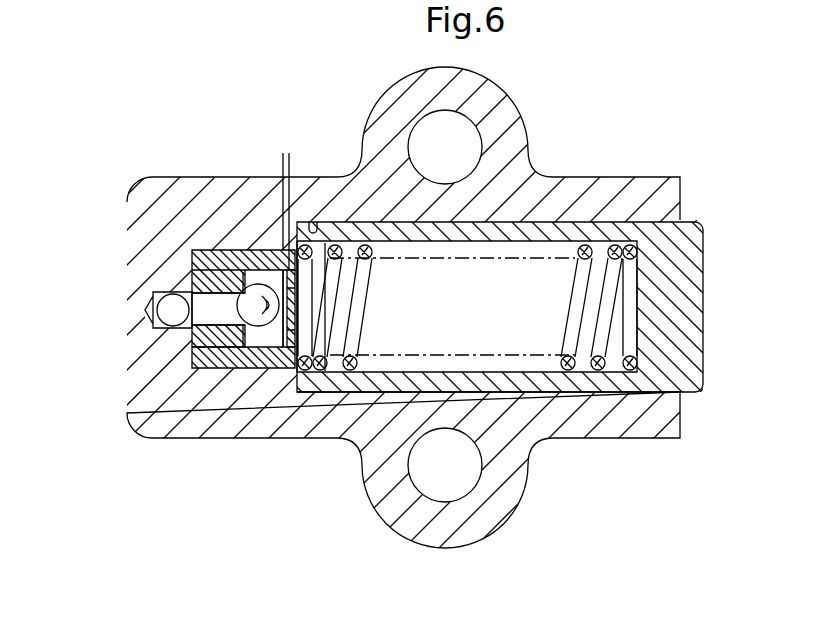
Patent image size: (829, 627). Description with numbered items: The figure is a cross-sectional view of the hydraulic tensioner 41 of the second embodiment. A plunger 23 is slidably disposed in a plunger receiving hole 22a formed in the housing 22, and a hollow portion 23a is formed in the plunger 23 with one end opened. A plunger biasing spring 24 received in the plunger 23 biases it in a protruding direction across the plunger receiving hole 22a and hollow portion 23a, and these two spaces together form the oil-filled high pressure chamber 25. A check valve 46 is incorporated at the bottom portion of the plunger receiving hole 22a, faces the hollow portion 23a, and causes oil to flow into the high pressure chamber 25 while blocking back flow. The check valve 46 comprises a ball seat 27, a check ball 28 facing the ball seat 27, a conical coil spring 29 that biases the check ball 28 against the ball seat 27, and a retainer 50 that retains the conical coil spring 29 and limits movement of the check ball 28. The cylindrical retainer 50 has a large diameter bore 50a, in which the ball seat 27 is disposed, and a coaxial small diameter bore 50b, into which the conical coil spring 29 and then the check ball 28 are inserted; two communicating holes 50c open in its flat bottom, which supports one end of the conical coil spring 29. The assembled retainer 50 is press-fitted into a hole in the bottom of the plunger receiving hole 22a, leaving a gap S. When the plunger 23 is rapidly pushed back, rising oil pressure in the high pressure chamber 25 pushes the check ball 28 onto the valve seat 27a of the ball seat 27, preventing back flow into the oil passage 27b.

The hydraulic tensioner 41 is at (545, 107).
The housing 22 is at (649, 177).
The plunger receiving hole 22a is at (313, 232).
The plunger 23 is at (703, 262).
The hollow portion 23a is at (550, 270).
The plunger biasing spring 24 is at (603, 395).
The high pressure chamber 25 is at (536, 331).
The check valve 46 is at (303, 313).
The check ball 28 is at (268, 345).
The conical coil spring 29 is at (257, 285).
The ball seat 27 is at (200, 341).
The valve seat 27a is at (228, 292).
The oil passage 27b is at (205, 300).
The retainer 50 is at (228, 350).
The large diameter bore 50a is at (198, 368).
The small diameter bore 50b is at (280, 350).
The communicating holes 50c is at (297, 290).
The gap S is at (310, 158).